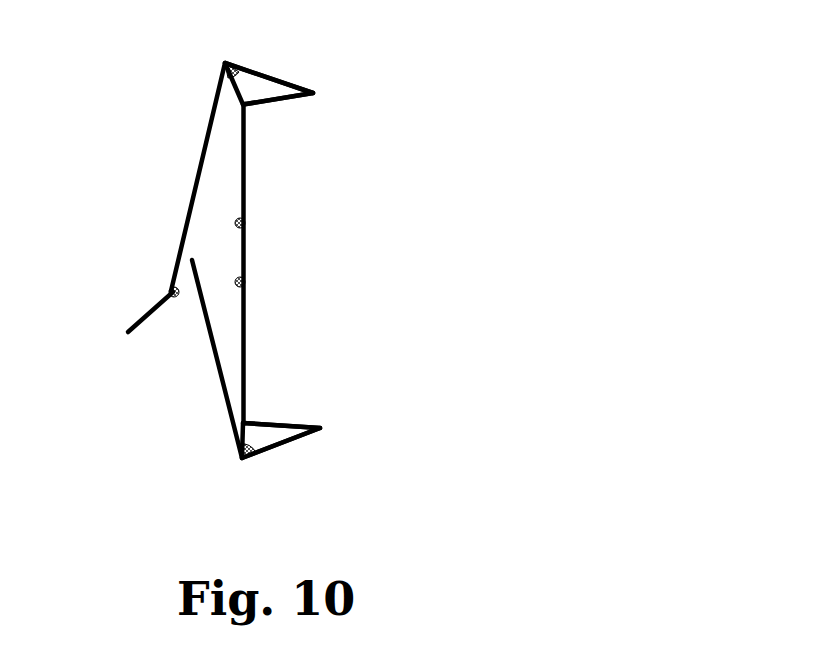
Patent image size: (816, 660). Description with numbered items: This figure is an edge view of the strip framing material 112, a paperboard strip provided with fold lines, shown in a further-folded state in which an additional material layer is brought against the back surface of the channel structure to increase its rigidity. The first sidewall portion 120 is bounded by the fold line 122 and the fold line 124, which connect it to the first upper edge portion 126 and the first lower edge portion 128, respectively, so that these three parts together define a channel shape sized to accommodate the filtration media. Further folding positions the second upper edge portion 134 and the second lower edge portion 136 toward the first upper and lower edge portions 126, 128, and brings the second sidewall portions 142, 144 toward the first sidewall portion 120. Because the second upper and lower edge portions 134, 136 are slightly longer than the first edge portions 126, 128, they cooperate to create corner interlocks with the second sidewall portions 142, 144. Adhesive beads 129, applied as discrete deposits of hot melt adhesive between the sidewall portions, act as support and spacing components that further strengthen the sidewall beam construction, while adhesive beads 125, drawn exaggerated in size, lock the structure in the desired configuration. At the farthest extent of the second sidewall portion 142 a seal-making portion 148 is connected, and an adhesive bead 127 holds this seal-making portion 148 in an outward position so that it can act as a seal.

The strip framing material 112 is at (353, 225).
The first sidewall portion 120 is at (245, 255).
The fold line 122 is at (247, 107).
The fold line 124 is at (247, 420).
The adhesive beads 125 is at (232, 62).
The first upper edge portion 126 is at (293, 97).
The adhesive bead 127 is at (175, 298).
The first lower edge portion 128 is at (300, 422).
The adhesive beads 129 is at (245, 222).
The second upper edge portion 134 is at (267, 77).
The second lower edge portion 136 is at (285, 448).
The second sidewall portion 142 is at (208, 132).
The second sidewall portion 144 is at (222, 393).
The seal-making portion 148 is at (140, 315).